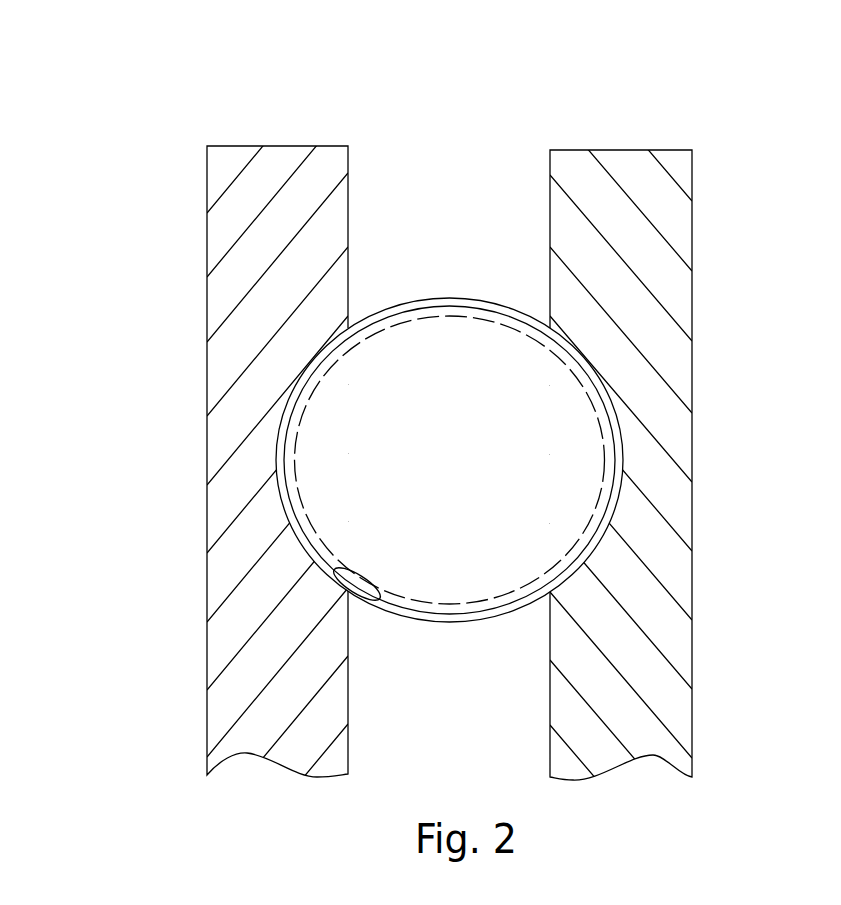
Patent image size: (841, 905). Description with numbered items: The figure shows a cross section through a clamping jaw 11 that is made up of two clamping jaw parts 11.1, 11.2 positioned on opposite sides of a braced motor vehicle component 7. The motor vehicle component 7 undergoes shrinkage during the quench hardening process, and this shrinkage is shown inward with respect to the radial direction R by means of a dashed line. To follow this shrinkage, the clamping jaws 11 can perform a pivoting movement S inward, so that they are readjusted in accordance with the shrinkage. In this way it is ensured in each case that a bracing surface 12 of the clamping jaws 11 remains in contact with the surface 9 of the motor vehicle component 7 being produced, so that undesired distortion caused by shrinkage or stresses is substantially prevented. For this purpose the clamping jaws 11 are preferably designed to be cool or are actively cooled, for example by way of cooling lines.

The clamping jaw 11 is at (447, 460).
The clamping jaw part 11.1 is at (230, 292).
The clamping jaw part 11.2 is at (682, 297).
The surface 9 is at (449, 298).
The motor vehicle component 7 is at (457, 623).
The bracing surface 12 is at (382, 591).
The pivoting movement S is at (310, 114).
The radial direction R is at (352, 455).